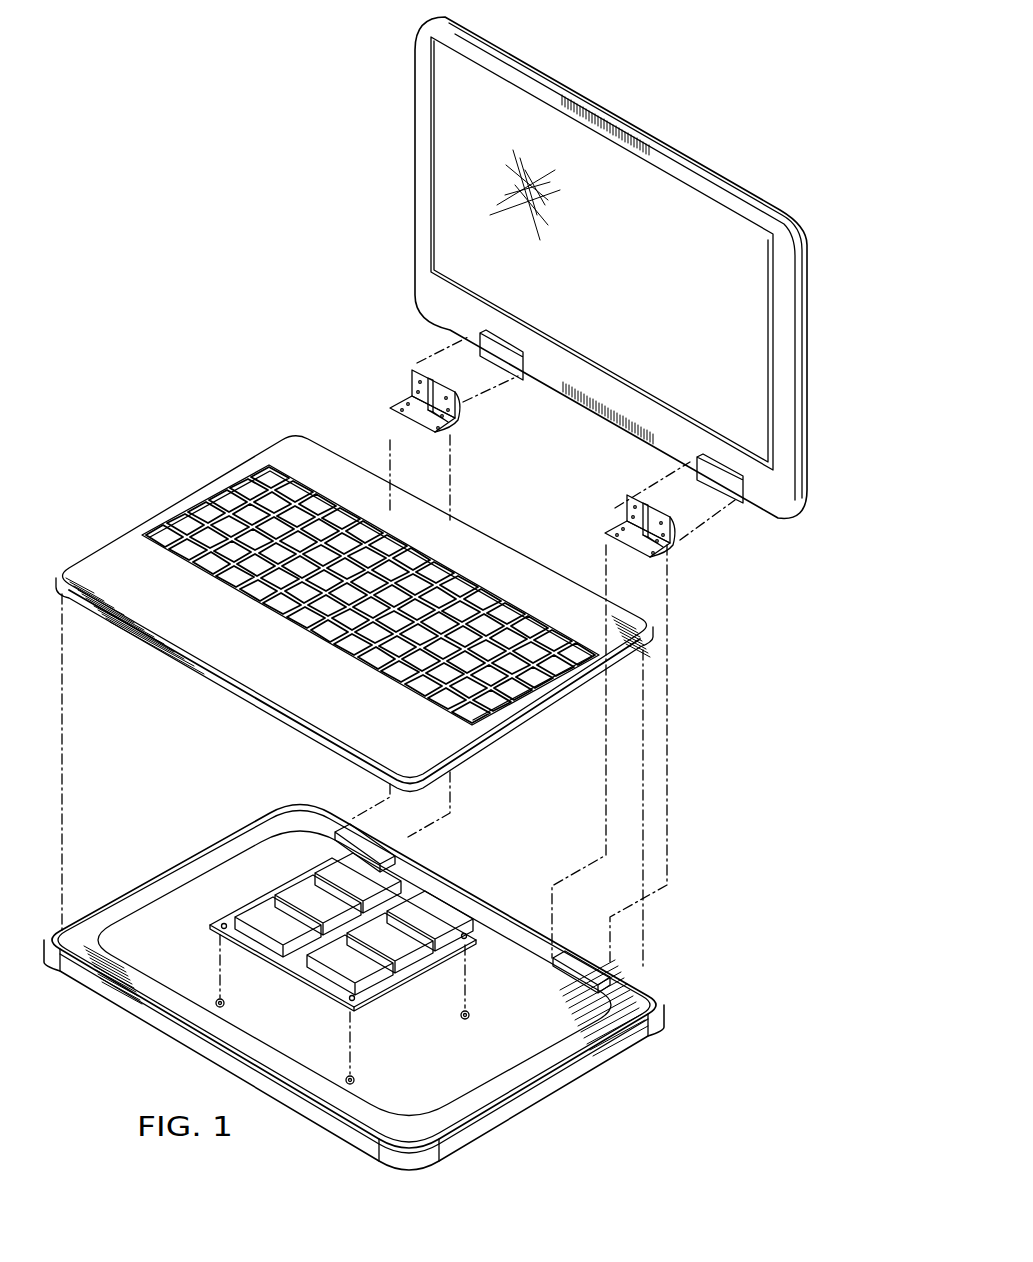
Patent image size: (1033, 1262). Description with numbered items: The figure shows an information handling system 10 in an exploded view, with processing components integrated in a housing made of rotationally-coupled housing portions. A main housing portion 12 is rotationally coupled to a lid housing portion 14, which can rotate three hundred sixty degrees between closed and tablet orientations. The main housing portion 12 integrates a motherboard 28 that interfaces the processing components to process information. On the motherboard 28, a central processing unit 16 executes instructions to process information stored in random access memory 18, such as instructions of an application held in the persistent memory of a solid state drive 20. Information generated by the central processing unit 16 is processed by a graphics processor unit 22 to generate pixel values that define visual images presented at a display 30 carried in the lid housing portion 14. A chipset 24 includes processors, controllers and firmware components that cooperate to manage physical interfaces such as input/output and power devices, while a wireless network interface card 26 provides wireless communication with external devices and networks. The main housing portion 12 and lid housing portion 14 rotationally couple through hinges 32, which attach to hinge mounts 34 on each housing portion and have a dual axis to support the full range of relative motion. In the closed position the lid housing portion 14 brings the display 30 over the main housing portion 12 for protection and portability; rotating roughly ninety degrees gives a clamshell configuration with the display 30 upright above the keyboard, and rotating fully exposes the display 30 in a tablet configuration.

The information handling system 10 is at (128, 190).
The main housing portion 12 is at (94, 1009).
The lid housing portion 14 is at (622, 110).
The central processing unit (CPU) 16 is at (300, 875).
The random access memory (RAM) 18 is at (287, 897).
The solid state drive (SSD) 20 is at (278, 925).
The graphics processor unit 22 is at (458, 930).
The chipset 24 is at (412, 950).
The wireless network interface card (WNIC) 26 is at (333, 960).
The motherboard 28 is at (226, 902).
The display 30 is at (588, 266).
The hinges 32 is at (393, 383).
The hinge mounts 34 is at (500, 350).